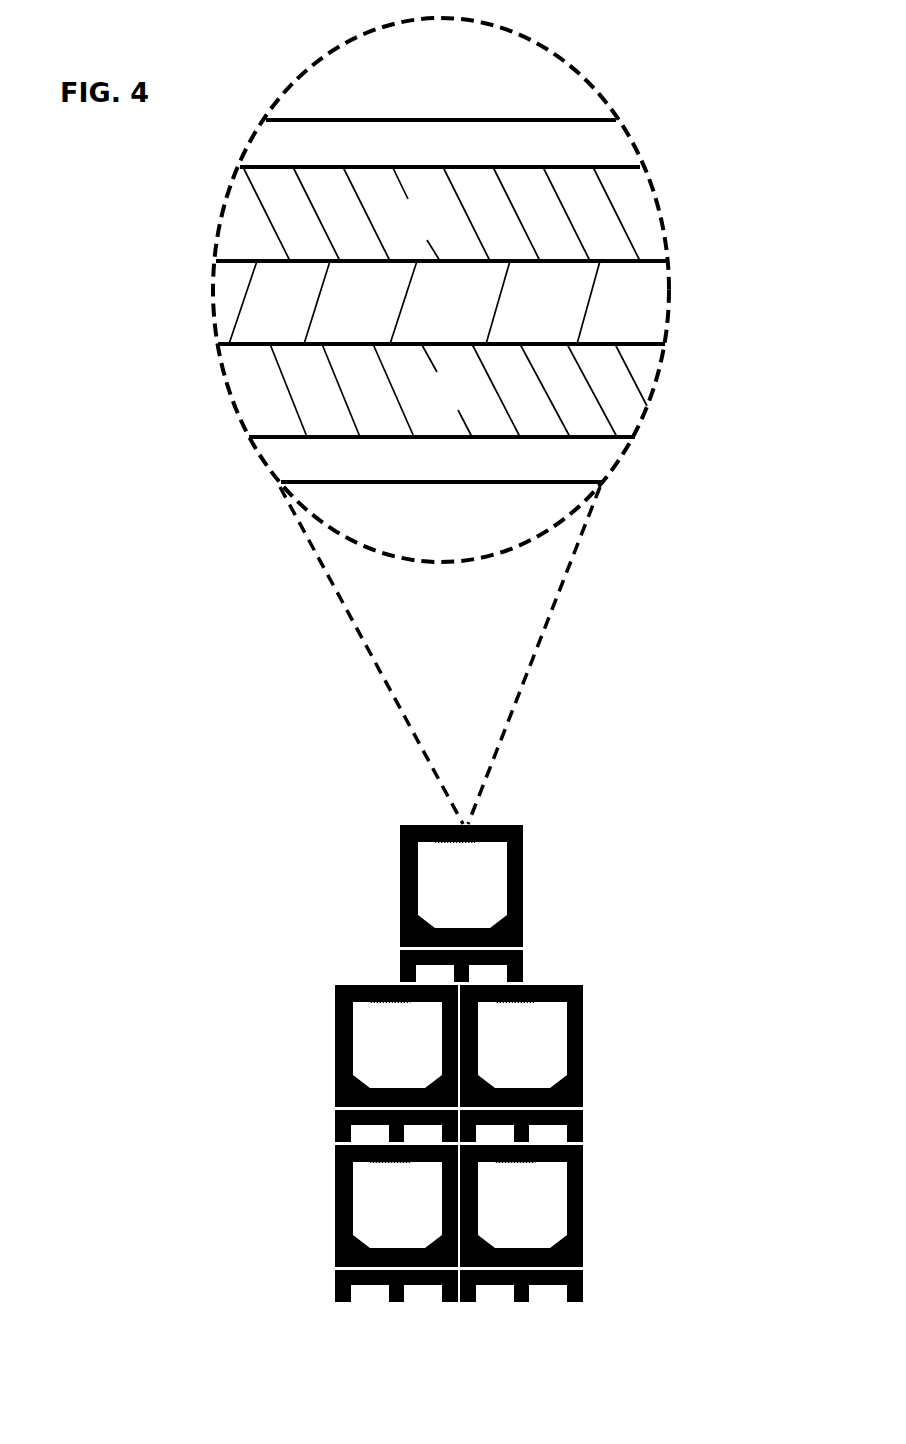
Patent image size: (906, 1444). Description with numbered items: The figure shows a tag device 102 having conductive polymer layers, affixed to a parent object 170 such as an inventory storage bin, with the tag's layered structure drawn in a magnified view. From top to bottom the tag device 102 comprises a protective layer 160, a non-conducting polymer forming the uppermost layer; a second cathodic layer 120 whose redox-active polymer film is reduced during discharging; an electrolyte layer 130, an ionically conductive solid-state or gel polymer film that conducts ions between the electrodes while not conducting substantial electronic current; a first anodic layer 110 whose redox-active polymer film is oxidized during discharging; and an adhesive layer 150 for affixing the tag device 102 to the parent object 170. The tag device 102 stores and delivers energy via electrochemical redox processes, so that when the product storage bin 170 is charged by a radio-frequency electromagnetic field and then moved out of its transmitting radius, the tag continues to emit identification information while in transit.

The tag device 102 is at (667, 393).
The first anodic layer 110 is at (448, 390).
The second cathodic layer 120 is at (441, 214).
The electrolyte layer 130 is at (441, 302).
The adhesive layer 150 is at (442, 466).
The protective layer 160 is at (440, 143).
The parent object 170 is at (469, 1063).